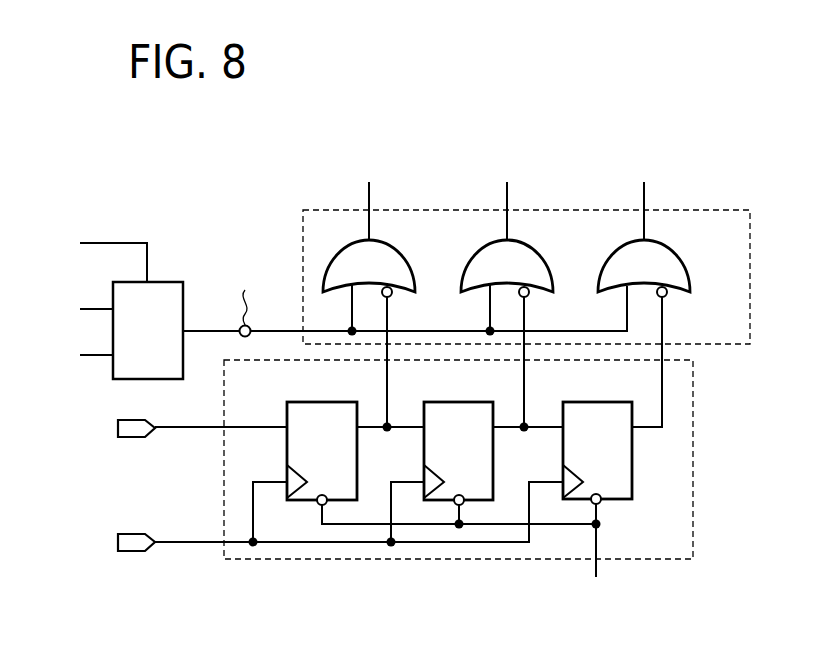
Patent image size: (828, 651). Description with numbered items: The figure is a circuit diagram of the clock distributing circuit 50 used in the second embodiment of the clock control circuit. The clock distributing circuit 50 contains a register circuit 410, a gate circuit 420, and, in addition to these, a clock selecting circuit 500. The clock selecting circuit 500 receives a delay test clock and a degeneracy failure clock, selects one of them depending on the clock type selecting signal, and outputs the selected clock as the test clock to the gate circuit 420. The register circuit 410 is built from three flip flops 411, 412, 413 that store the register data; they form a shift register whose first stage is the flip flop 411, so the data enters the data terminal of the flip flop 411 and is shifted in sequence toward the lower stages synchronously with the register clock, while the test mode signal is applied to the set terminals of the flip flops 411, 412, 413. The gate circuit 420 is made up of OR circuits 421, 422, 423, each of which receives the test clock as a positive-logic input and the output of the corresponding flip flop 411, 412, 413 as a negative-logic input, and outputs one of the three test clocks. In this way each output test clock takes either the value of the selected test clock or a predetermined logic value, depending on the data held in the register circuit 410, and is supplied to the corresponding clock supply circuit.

The clock distributing circuit 50 is at (249, 206).
The clock selecting circuit 500 is at (176, 281).
The register circuit 410 is at (693, 503).
The flip flop 411 is at (287, 418).
The flip flop 412 is at (467, 402).
The flip flop 413 is at (617, 500).
The gate circuit 420 is at (733, 346).
The OR circuit 421 is at (447, 255).
The OR circuit 422 is at (550, 274).
The OR circuit 423 is at (690, 275).